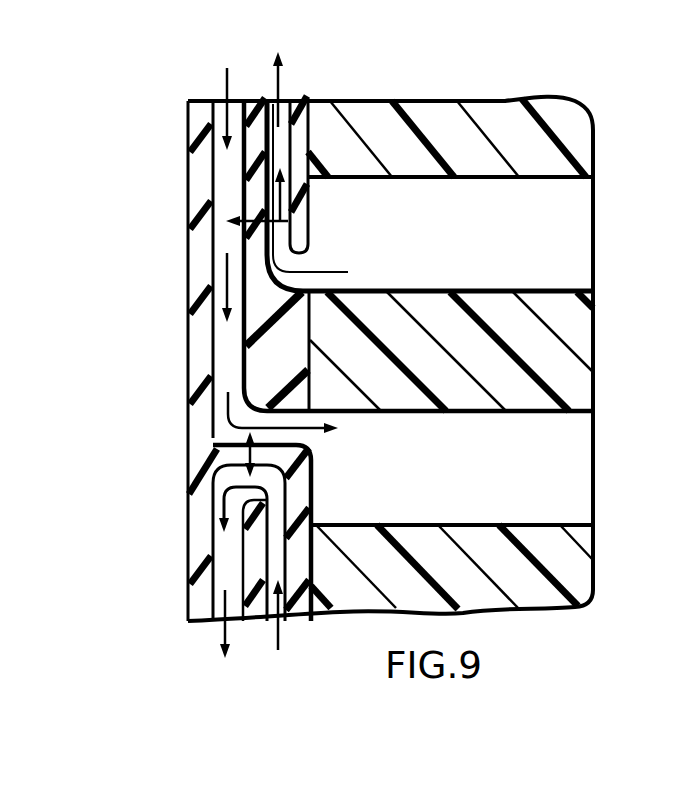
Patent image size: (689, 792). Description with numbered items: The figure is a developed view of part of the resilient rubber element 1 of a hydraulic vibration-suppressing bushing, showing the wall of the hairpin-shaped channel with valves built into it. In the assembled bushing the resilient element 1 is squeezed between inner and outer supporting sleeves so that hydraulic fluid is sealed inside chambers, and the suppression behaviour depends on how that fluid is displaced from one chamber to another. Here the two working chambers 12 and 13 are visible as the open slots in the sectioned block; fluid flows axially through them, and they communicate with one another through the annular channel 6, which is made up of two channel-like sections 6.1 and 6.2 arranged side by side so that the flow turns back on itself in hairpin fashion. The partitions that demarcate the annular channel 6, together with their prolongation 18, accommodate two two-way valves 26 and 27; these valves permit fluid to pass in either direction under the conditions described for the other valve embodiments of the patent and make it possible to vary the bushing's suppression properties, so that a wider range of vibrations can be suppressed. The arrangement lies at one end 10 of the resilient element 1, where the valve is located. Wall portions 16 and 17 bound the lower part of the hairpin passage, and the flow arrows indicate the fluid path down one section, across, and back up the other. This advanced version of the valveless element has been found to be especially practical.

The resilient rubber element 1 is at (454, 71).
The annular channel 6 is at (222, 160).
The channel-like section 6.1 is at (284, 118).
The channel-like section 6.2 is at (228, 430).
The end 10 is at (143, 338).
The working chamber 12 is at (428, 240).
The working chamber 13 is at (428, 478).
The tube wall 16 is at (212, 392).
The U-shaped tube bend 17 is at (235, 468).
The prolongation 18 is at (250, 190).
The two-way valve 26 is at (238, 441).
The two-way valve 27 is at (252, 229).